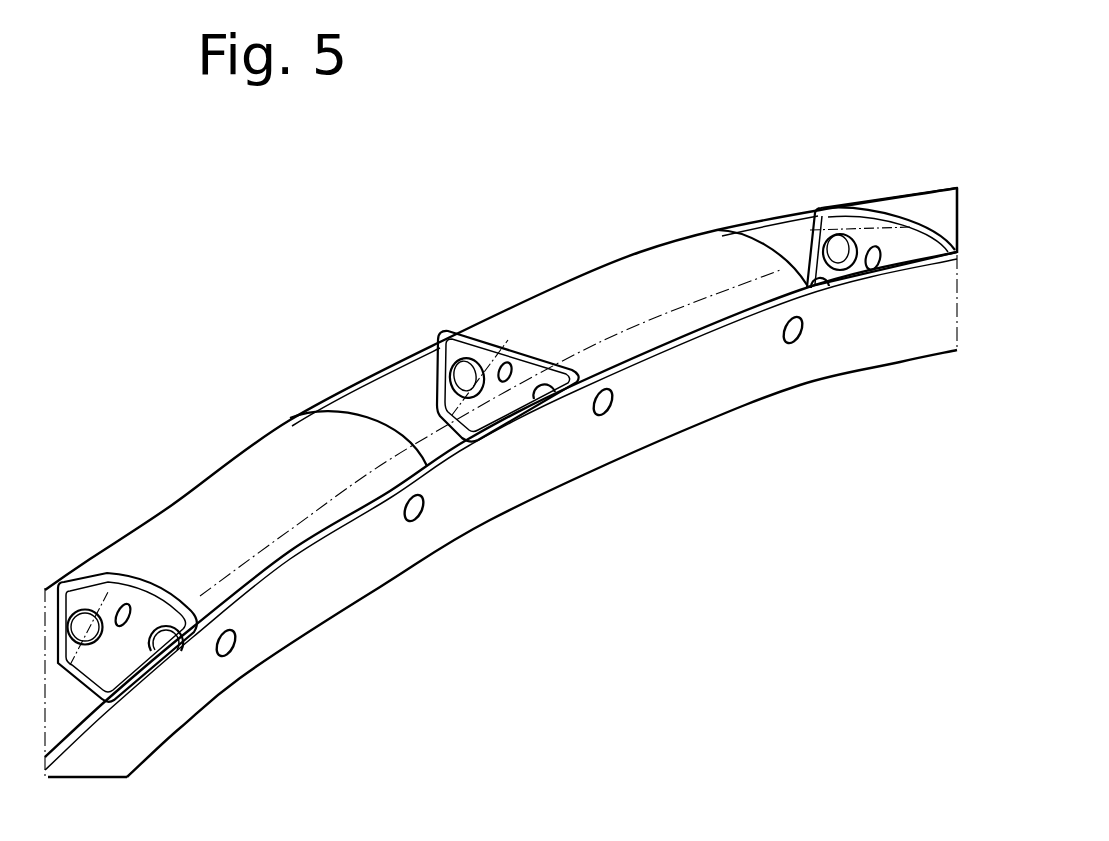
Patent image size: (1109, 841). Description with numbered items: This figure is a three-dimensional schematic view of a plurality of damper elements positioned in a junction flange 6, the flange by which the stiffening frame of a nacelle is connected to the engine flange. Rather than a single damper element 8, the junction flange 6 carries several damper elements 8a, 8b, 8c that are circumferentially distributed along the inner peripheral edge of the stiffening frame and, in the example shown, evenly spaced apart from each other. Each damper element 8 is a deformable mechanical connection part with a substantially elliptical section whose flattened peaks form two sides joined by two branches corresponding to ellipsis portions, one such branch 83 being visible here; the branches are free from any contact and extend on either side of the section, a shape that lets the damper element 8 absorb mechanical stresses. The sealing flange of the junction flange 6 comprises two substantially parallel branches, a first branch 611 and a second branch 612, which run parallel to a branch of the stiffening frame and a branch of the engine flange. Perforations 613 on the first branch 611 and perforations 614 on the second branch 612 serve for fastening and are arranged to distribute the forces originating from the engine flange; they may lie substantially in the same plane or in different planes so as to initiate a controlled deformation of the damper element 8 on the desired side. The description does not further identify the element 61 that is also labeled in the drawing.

The junction flange 6 is at (165, 318).
The ring base body 61 is at (233, 649).
The first branch of the sealing flange 611 is at (468, 376).
The second branch of the sealing flange 612 is at (422, 512).
The perforations on the first branch 613 is at (510, 370).
The perforations on the second branch 614 is at (612, 406).
The damper element 8 is at (674, 224).
The damper element 8a is at (166, 500).
The damper element 8b is at (445, 330).
The damper element 8c is at (917, 176).
The branch of the damper element 83 is at (628, 283).